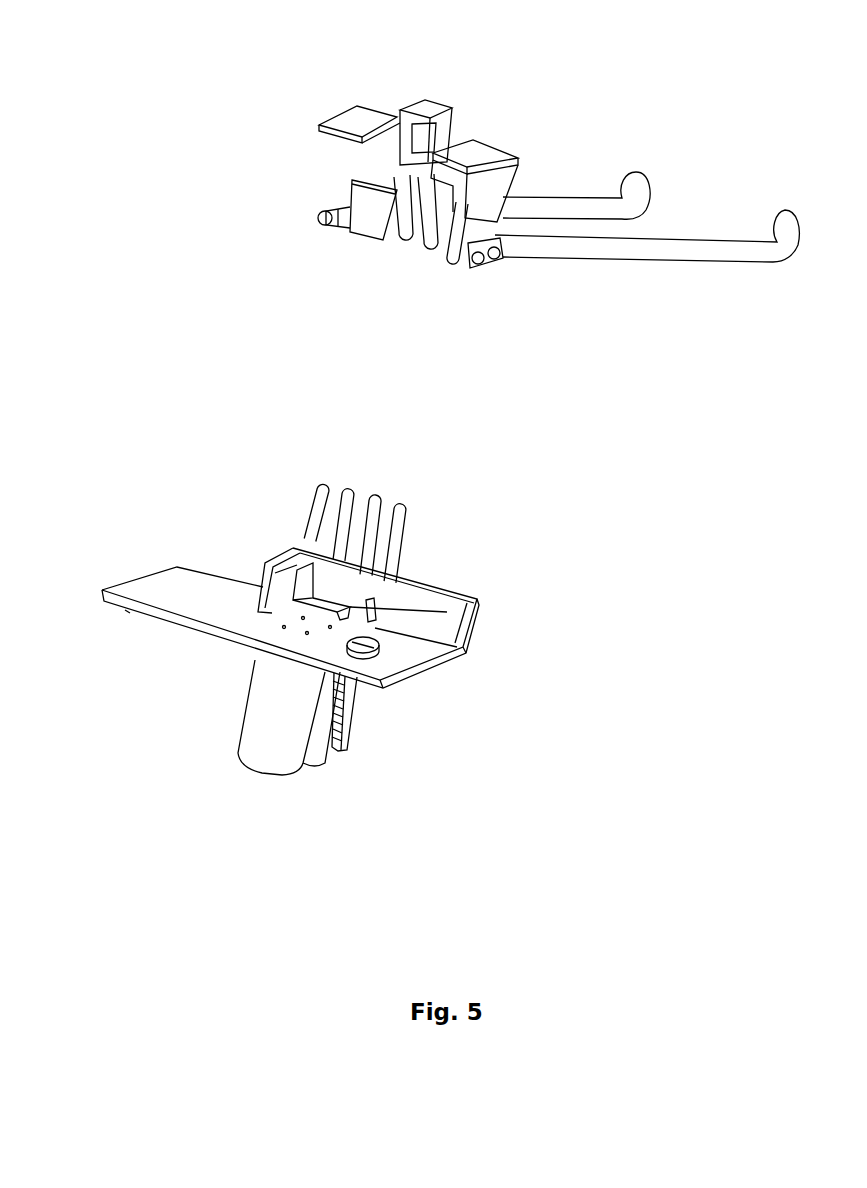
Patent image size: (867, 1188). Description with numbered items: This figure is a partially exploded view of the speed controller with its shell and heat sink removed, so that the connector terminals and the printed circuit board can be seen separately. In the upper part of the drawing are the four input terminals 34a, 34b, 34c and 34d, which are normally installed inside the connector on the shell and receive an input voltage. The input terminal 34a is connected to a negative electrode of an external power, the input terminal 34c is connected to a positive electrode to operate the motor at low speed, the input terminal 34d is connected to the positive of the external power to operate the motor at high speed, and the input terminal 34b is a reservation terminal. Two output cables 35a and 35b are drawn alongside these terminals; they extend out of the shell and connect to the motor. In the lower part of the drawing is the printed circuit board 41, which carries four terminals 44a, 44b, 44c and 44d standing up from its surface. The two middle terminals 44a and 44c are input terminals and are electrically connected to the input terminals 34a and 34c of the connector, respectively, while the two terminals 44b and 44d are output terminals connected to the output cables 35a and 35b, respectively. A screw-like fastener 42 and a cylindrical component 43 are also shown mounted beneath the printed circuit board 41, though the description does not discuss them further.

The input terminal 34a is at (352, 121).
The input terminal 34b is at (393, 155).
The input terminal 34c is at (430, 105).
The input terminal 34d is at (495, 152).
The output cable 35a is at (544, 206).
The output cable 35b is at (635, 247).
The printed circuit board 41 is at (157, 590).
The screw 42 is at (345, 720).
The cylindrical component 43 is at (275, 743).
The terminal 44a is at (347, 487).
The terminal 44b is at (310, 530).
The terminal 44c is at (380, 497).
The terminal 44d is at (405, 526).